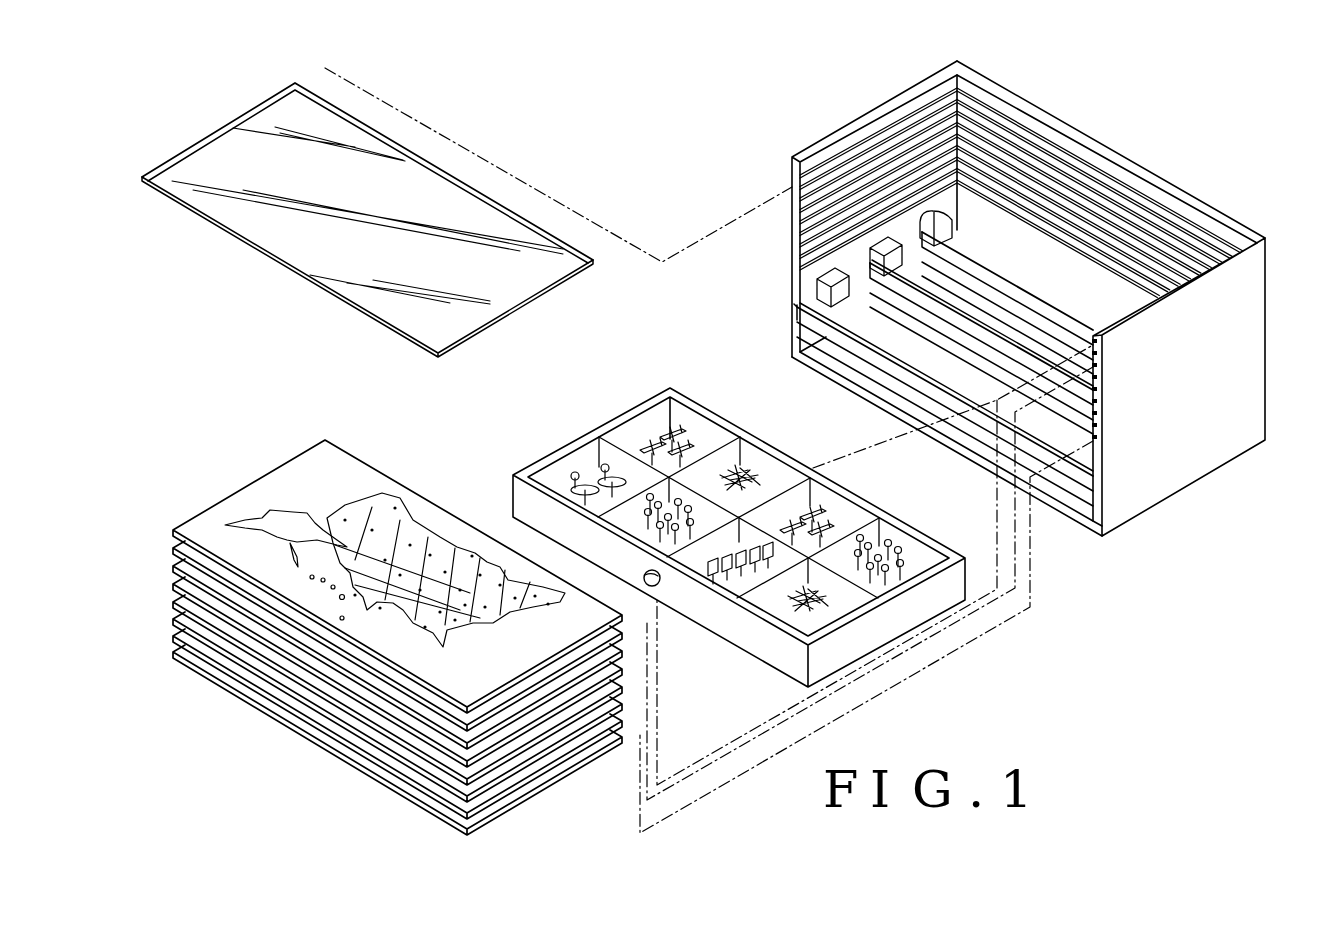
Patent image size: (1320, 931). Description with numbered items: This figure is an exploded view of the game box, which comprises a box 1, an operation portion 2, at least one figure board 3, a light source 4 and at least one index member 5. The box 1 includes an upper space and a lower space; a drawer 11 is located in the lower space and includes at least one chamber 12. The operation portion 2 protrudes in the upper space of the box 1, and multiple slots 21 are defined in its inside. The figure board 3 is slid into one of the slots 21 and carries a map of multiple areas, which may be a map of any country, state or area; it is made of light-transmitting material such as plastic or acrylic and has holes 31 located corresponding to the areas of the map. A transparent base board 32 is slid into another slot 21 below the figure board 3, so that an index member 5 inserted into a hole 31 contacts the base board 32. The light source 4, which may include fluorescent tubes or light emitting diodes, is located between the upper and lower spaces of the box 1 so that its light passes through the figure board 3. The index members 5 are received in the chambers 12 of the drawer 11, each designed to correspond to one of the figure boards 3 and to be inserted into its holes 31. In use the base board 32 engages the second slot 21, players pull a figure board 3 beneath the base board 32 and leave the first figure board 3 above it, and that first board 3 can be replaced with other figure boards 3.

The box 1 is at (863, 397).
The operation portion 2 is at (1110, 147).
The slots 21 is at (1002, 100).
The figure board 3 is at (265, 695).
The holes 31 is at (413, 527).
The transparent base board 32 is at (293, 225).
The light source 4 is at (860, 290).
The index member 5 is at (615, 472).
The drawer 11 is at (563, 450).
The chamber 12 is at (650, 428).